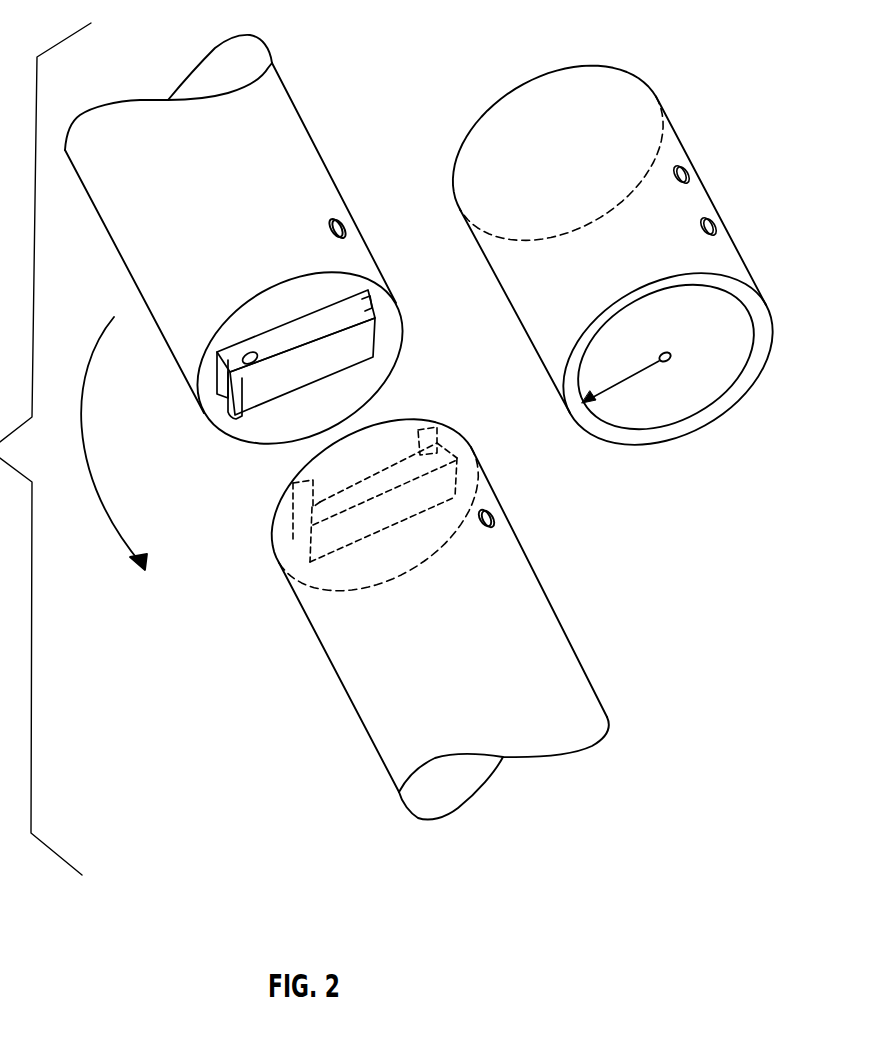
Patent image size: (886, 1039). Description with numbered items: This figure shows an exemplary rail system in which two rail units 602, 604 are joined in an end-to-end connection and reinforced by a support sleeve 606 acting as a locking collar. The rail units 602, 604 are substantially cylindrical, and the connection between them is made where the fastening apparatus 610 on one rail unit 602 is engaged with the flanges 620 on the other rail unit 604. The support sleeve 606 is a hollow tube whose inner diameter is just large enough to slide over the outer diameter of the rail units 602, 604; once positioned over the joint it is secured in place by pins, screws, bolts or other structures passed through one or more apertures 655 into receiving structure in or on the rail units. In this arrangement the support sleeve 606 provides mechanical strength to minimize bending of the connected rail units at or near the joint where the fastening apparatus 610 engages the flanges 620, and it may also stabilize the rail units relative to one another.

The rail unit 602 is at (150, 262).
The rail unit 604 is at (353, 667).
The support sleeve 606 is at (517, 272).
The fastening apparatus 610 is at (358, 347).
The flanges 620 is at (308, 480).
The apertures 655 is at (690, 180).